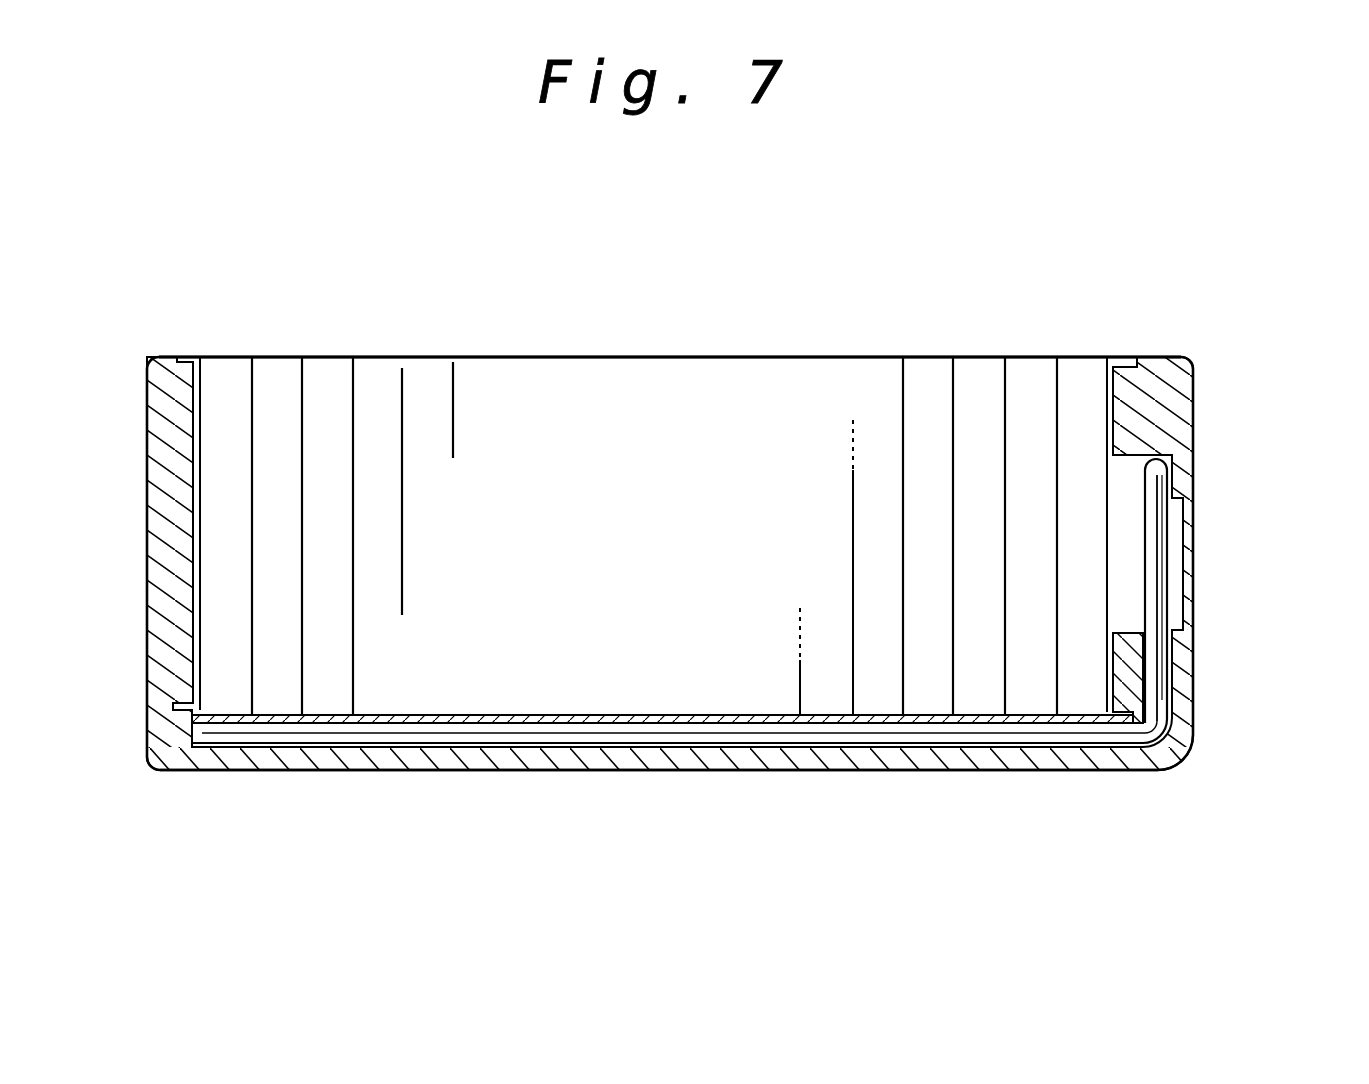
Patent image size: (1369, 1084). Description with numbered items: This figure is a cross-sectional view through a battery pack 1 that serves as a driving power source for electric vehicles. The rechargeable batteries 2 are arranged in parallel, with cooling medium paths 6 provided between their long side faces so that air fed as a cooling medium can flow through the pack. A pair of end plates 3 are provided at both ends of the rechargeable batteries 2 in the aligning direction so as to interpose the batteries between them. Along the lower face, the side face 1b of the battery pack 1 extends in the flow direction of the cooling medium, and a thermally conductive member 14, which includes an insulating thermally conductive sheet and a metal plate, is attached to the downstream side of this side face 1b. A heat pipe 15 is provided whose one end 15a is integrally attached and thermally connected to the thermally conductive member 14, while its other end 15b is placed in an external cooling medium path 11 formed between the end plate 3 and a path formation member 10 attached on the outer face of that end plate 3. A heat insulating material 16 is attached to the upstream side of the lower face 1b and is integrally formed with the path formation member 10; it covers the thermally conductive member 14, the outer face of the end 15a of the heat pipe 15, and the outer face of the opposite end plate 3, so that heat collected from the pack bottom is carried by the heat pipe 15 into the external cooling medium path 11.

The battery pack 1 is at (693, 338).
The side face of the battery pack 1b is at (402, 723).
The rechargeable batteries 2 is at (384, 380).
The end plate 3 is at (192, 538).
The cooling medium paths 6 is at (1003, 383).
The path formation member 10 is at (1177, 442).
The external cooling medium path 11 is at (1128, 622).
The thermally conductive member 14 is at (625, 730).
The heat pipe 15 is at (928, 745).
The one end of the heat pipe 15a is at (771, 735).
The other end of the heat pipe 15b is at (1158, 592).
The heat insulating material 16 is at (487, 773).